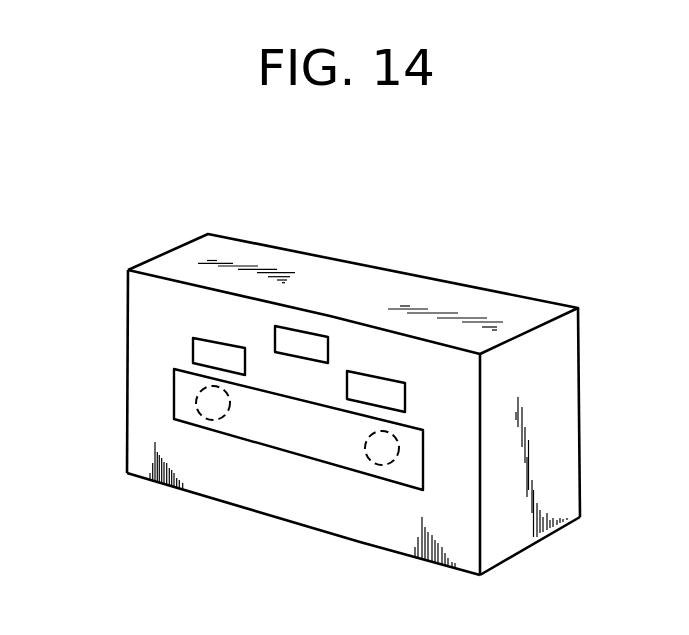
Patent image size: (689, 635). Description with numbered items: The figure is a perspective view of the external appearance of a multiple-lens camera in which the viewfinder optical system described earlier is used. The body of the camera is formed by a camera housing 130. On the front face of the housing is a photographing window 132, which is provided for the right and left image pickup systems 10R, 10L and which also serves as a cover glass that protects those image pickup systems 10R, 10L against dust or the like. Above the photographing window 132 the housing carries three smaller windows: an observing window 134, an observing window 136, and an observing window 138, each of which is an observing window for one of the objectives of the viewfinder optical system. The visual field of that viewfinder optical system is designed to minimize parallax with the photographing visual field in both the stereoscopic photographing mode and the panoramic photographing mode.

The camera housing 130 is at (480, 281).
The photographing window 132 is at (183, 392).
The observing window 134 is at (192, 347).
The observing window 136 is at (400, 395).
The observing window 138 is at (307, 340).
The right image pickup system 10R is at (222, 421).
The left image pickup system 10L is at (378, 467).